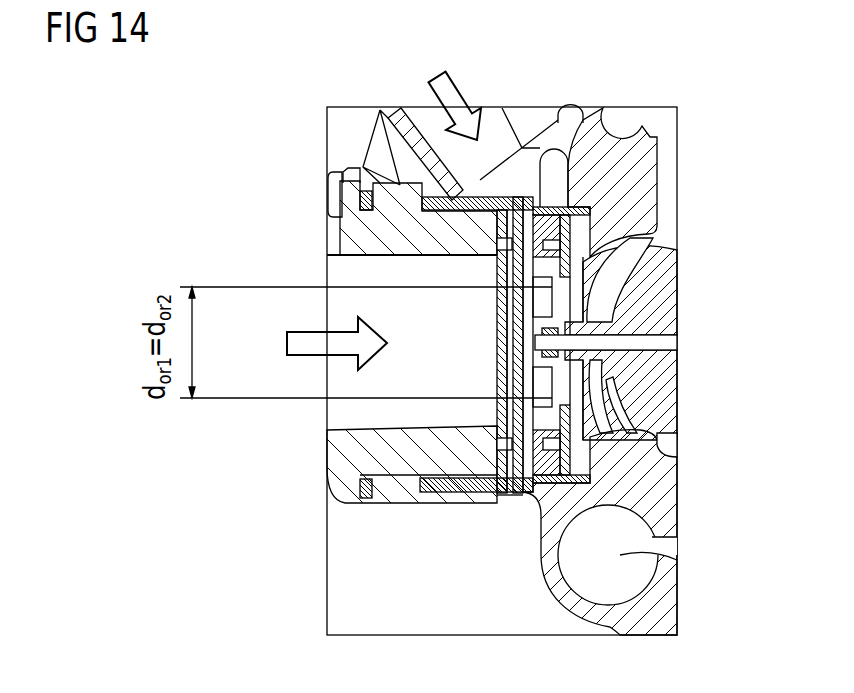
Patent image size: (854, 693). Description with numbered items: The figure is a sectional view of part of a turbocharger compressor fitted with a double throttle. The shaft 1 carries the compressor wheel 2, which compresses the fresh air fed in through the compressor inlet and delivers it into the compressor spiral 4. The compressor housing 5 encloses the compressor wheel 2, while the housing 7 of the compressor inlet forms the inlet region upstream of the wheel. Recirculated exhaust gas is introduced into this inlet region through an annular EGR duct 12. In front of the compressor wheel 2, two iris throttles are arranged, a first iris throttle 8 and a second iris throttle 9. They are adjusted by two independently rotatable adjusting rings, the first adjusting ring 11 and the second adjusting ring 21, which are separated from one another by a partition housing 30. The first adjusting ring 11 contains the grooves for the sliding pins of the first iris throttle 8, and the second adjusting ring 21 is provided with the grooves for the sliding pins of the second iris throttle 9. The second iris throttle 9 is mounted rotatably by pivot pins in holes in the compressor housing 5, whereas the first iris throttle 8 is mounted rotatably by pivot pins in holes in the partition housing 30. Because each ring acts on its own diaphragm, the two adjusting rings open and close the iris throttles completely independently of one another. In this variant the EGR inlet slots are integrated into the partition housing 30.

The shaft 1 is at (658, 342).
The compressor wheel 2 is at (657, 298).
The compressor spiral 4 is at (620, 555).
The compressor housing 5 is at (624, 178).
The housing of the compressor inlet 7 is at (362, 239).
The first iris throttle 8 is at (515, 415).
The second iris throttle 9 is at (563, 453).
The first adjusting ring 11 is at (503, 464).
The annular EGR duct 12 is at (490, 497).
The second adjusting ring 21 is at (542, 192).
The partition housing 30 is at (435, 198).